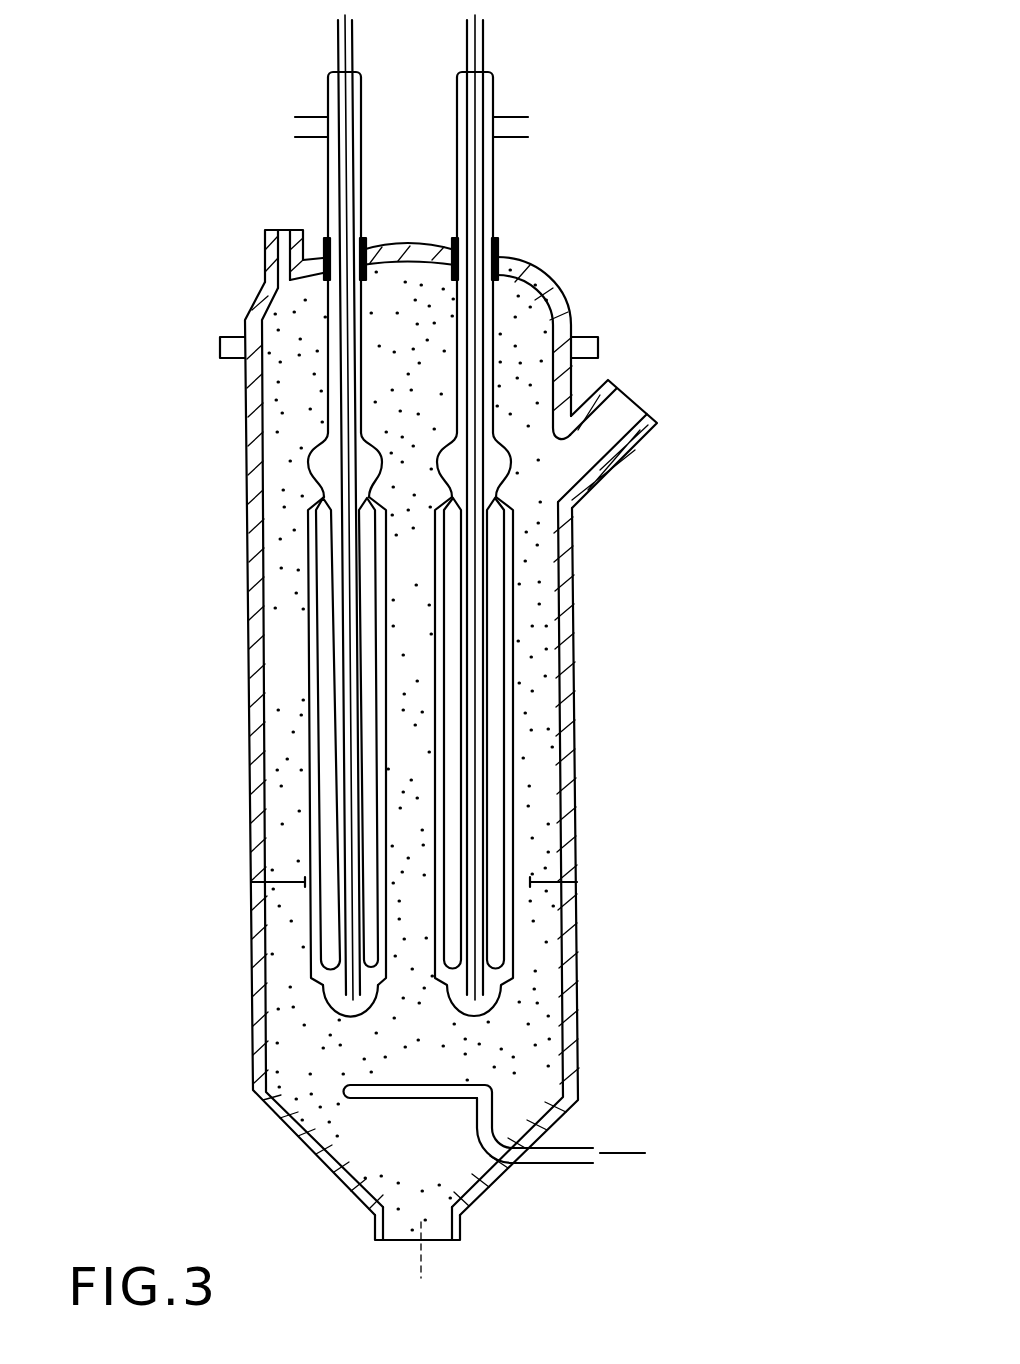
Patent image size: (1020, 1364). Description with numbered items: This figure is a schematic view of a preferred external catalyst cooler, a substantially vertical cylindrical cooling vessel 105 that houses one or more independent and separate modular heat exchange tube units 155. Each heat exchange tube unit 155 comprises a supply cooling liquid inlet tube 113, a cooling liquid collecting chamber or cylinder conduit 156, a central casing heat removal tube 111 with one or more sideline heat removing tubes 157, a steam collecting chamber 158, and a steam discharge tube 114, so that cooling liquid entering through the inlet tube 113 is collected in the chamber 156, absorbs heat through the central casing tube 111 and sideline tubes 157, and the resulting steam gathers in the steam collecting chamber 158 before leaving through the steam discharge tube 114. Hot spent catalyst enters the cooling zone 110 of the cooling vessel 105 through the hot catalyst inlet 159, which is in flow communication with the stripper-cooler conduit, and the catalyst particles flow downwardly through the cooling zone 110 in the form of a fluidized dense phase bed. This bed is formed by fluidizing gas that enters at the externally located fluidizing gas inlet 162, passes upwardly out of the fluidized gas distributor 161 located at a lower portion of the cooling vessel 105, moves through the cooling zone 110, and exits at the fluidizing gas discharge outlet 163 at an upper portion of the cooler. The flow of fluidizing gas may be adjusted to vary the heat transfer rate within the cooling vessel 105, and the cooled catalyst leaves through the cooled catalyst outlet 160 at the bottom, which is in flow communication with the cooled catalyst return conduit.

The cooling vessel 105 is at (595, 762).
The cooling zone 110 is at (545, 636).
The central casing heat removal tube 111 is at (340, 698).
The supply cooling liquid inlet tube 113 is at (485, 22).
The steam discharge tube 114 is at (290, 126).
The heat exchange tube unit 155 is at (515, 180).
The cooling liquid collecting chamber 156 is at (340, 1000).
The sideline heat removing tube 157 is at (310, 735).
The steam collecting chamber 158 is at (313, 480).
The hot catalyst inlet 159 is at (650, 403).
The cooled catalyst outlet 160 is at (445, 1247).
The fluidized gas distributor 161 is at (383, 1088).
The fluidizing gas inlet 162 is at (583, 1168).
The fluidizing gas discharge outlet 163 is at (290, 235).